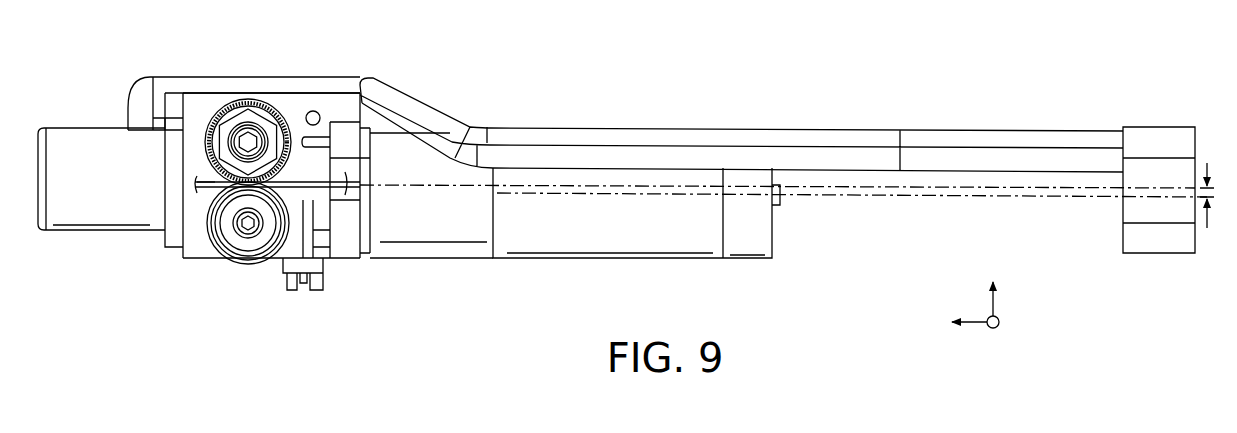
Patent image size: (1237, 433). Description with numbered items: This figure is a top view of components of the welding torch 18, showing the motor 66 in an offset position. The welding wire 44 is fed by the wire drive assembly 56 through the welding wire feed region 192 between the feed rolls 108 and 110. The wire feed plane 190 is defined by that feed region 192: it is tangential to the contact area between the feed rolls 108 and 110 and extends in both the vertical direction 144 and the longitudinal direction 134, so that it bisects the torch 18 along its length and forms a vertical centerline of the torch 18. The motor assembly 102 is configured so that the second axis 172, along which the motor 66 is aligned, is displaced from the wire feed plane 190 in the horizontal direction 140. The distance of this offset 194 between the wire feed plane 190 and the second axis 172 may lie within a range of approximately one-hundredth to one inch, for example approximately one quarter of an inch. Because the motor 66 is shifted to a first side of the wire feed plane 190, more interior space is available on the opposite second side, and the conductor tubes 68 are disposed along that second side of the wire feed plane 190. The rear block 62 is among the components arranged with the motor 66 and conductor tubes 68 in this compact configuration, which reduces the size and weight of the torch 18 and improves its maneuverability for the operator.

The torch 18 is at (514, 78).
The welding wire 44 is at (210, 178).
The wire drive assembly 56 is at (160, 272).
The rear block 62 is at (1157, 126).
The motor 66 is at (611, 252).
The conductor tubes 68 is at (653, 152).
The motor assembly 102 is at (426, 279).
The feed roll 108 is at (275, 123).
The feed roll 110 is at (251, 263).
The longitudinal direction 134 is at (976, 323).
The horizontal direction 140 is at (996, 306).
The vertical direction 144 is at (1000, 328).
The second axis 172 is at (856, 198).
The wire feed plane 190 is at (940, 187).
The welding wire feed region 192 is at (290, 192).
The offset 194 is at (1212, 215).